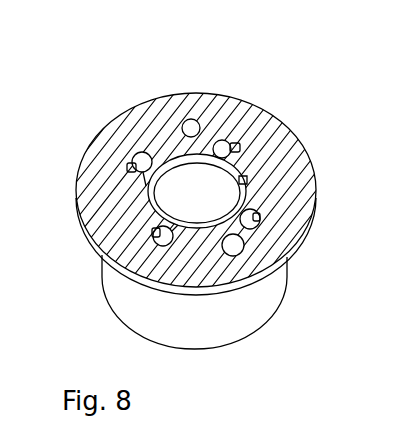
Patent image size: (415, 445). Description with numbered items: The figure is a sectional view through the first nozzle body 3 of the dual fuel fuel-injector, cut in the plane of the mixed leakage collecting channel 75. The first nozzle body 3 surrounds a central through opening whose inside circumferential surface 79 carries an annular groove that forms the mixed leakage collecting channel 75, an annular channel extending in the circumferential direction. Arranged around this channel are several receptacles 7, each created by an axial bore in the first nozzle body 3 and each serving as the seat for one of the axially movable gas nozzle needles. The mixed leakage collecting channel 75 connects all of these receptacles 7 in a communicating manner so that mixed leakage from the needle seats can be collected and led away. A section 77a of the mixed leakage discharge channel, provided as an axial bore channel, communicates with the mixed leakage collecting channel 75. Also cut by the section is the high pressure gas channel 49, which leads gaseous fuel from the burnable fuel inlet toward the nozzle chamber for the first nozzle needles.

The first nozzle body 3 is at (120, 127).
The seat 7 is at (130, 164).
The high pressure gas channel 49 is at (191, 124).
The mixed leakage collecting channel 75 is at (182, 153).
The section of mixed leakage discharge channel 77a is at (243, 180).
The inside circumferential surface 79 is at (179, 181).